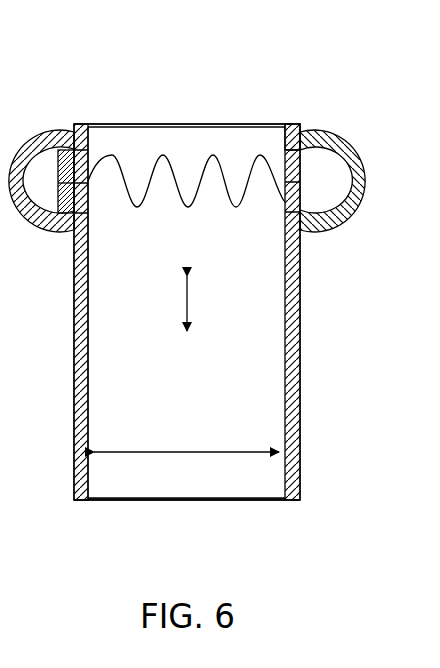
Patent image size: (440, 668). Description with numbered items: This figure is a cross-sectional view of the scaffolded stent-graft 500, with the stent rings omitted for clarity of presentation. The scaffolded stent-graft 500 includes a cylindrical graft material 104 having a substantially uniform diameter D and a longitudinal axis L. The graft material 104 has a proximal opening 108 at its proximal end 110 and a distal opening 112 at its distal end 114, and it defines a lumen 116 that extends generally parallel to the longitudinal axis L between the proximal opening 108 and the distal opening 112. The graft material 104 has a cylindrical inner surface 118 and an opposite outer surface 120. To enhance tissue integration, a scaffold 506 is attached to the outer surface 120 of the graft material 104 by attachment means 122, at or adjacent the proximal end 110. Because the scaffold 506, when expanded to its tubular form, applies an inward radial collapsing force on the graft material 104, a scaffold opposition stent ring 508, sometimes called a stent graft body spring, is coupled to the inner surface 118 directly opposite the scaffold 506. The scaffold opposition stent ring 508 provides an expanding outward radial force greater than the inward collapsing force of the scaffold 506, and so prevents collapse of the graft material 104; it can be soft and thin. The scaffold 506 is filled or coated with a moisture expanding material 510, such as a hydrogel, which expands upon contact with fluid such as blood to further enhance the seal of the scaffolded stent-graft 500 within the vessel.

The scaffolded stent-graft 500 is at (135, 93).
The moisture expanding material 510 is at (48, 160).
The scaffold 506 is at (320, 130).
The proximal opening 108 is at (172, 104).
The proximal end 110 is at (256, 123).
The attachment means 122 is at (90, 157).
The scaffold opposition stent ring 508 is at (152, 188).
The outer surface 120 is at (74, 287).
The inner surface 118 is at (88, 279).
The lumen 116 is at (203, 384).
The graft material 104 is at (300, 340).
The distal end 114 is at (108, 500).
The distal opening 112 is at (242, 513).
The longitudinal axis L is at (188, 292).
The diameter D is at (147, 452).